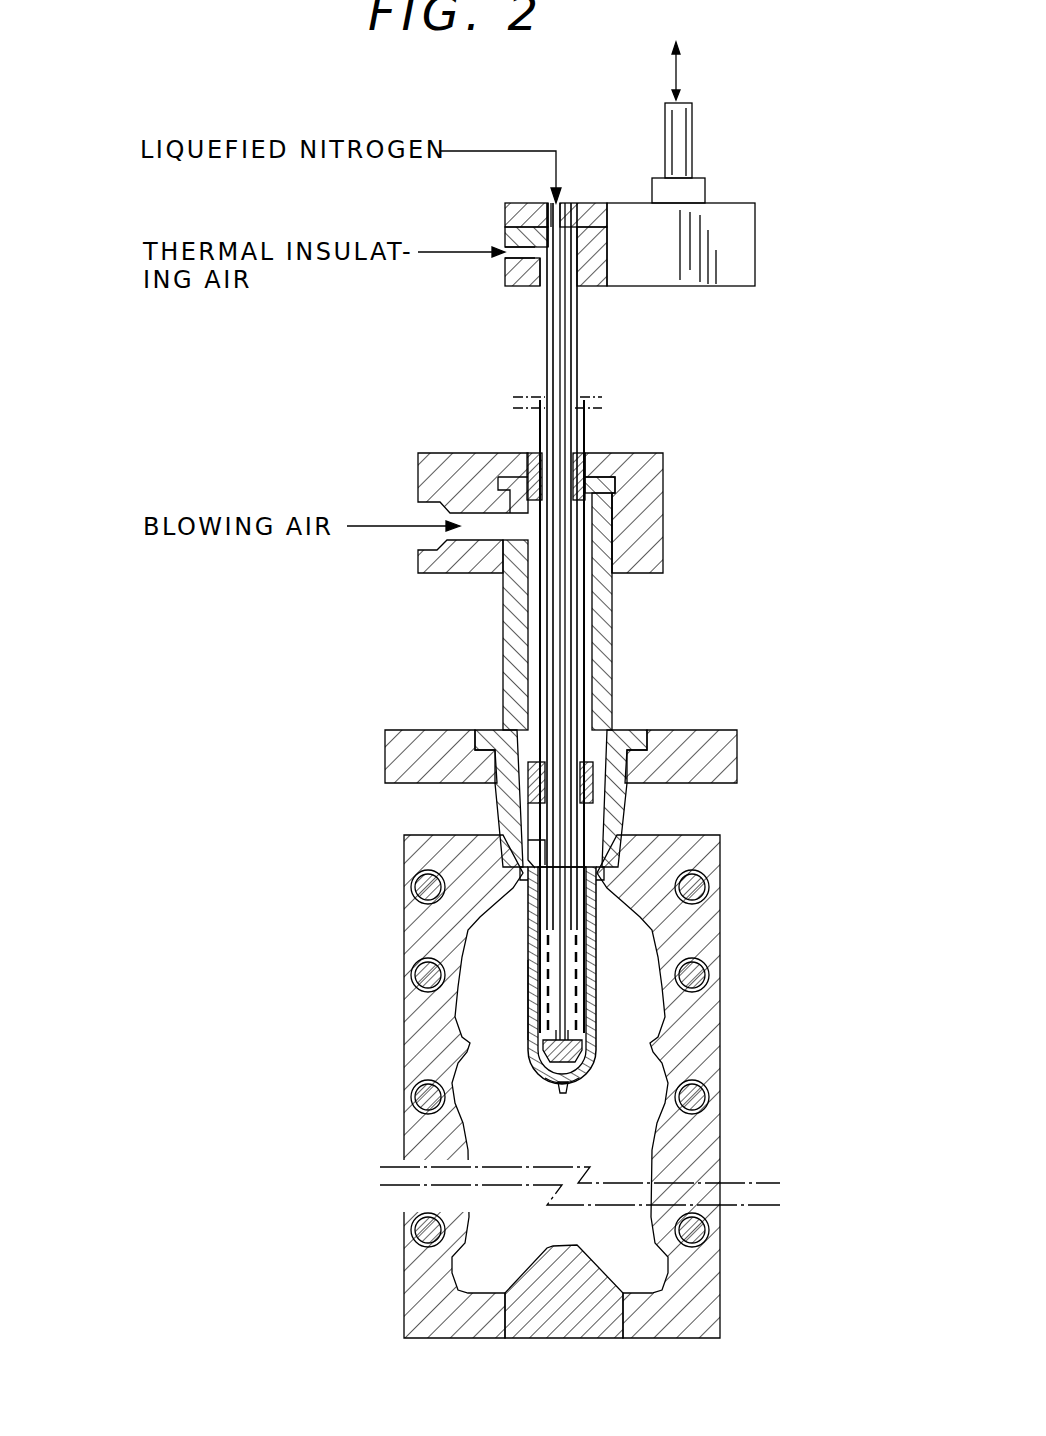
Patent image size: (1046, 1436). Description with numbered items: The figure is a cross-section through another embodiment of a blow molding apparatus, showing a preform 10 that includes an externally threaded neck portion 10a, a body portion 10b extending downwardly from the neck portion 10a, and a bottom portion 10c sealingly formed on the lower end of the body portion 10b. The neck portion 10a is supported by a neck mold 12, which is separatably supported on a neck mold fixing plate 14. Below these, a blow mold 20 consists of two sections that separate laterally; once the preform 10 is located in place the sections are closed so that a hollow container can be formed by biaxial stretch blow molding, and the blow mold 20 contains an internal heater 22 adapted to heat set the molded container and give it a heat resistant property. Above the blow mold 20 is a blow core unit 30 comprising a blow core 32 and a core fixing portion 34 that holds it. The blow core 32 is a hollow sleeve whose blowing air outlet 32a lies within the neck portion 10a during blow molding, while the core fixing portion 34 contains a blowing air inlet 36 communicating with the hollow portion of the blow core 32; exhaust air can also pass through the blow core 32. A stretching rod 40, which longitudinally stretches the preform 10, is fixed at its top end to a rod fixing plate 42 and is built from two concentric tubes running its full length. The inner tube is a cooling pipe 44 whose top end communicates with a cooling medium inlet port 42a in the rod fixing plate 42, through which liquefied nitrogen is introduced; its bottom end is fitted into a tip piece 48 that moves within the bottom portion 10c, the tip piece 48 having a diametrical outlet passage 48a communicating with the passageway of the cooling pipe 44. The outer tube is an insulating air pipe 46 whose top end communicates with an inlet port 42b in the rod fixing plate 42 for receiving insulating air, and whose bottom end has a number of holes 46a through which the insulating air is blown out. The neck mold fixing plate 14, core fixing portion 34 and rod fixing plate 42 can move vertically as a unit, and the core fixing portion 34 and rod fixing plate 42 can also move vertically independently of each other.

The preform 10 is at (598, 980).
The neck portion 10a is at (520, 878).
The body portion 10b is at (530, 1000).
The bottom portion 10c is at (548, 1082).
The neck mold 12 is at (624, 812).
The neck mold fixing plate 14 is at (740, 752).
The blow mold 20 is at (406, 1080).
The internal heater 22 is at (718, 900).
The blow core unit 30 is at (680, 548).
The blow core 32 is at (612, 686).
The blowing air outlet 32a is at (528, 845).
The core fixing portion 34 is at (652, 566).
The blowing air inlet 36 is at (432, 514).
The stretching rod 40 is at (576, 358).
The rod fixing plate 42 is at (736, 242).
The cooling medium inlet port 42a is at (561, 205).
The inlet port 42b is at (504, 242).
The cooling pipe 44 is at (548, 334).
The insulating air pipe 46 is at (580, 424).
The holes 46a is at (576, 1000).
The tip piece 48 is at (582, 1086).
The outlet passage 48a is at (596, 1050).